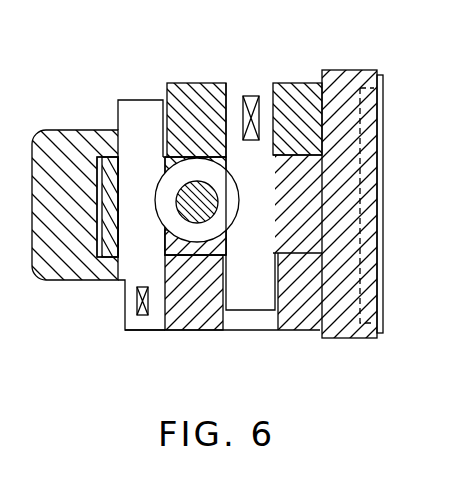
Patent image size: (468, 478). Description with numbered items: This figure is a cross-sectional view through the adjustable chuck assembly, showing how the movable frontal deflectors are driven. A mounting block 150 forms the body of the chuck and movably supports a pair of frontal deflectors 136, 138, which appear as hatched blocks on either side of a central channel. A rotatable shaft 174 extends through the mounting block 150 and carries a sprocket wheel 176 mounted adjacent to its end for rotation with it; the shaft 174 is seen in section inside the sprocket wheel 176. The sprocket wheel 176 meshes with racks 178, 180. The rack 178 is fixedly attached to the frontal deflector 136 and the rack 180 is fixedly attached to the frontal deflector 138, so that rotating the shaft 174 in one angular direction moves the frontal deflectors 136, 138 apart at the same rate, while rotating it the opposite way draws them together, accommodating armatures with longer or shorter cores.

The frontal deflector 136 is at (200, 310).
The frontal deflector 138 is at (188, 93).
The mounting block 150 is at (317, 182).
The rotatable shaft 174 is at (178, 194).
The sprocket wheel 176 is at (232, 217).
The rack 178 is at (158, 318).
The rack 180 is at (262, 85).